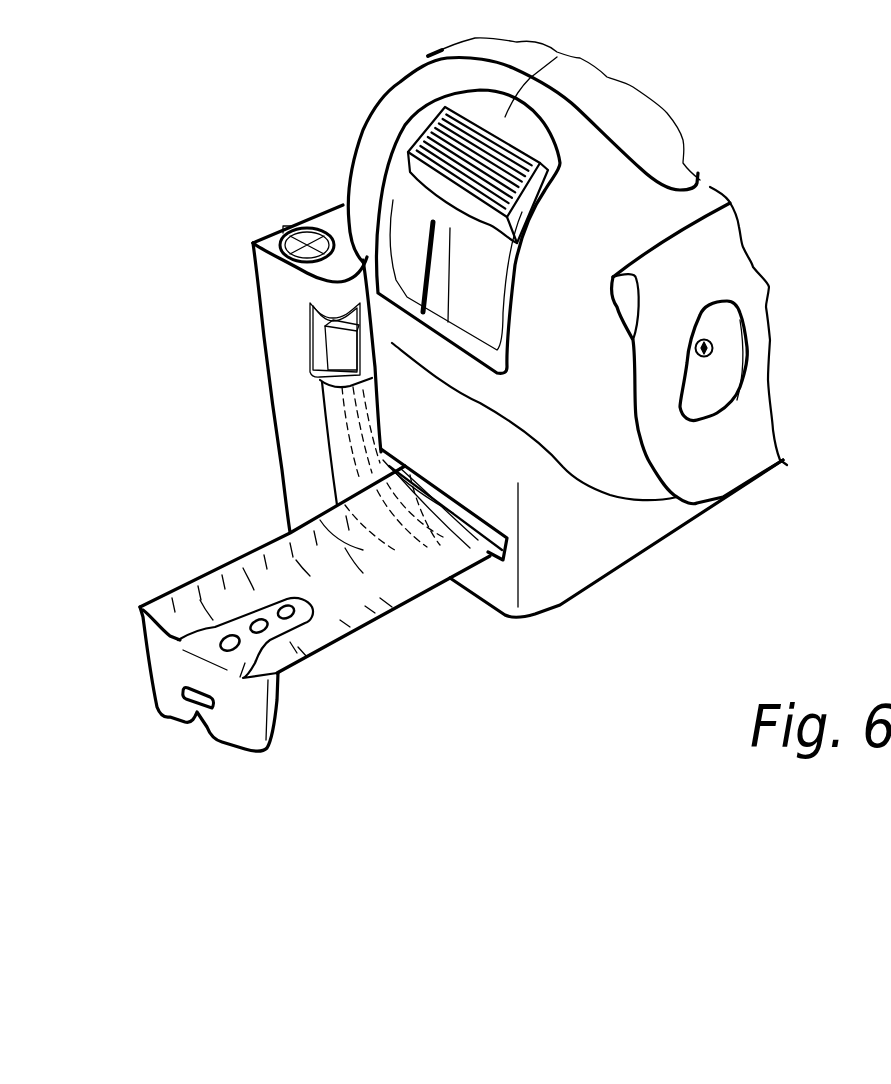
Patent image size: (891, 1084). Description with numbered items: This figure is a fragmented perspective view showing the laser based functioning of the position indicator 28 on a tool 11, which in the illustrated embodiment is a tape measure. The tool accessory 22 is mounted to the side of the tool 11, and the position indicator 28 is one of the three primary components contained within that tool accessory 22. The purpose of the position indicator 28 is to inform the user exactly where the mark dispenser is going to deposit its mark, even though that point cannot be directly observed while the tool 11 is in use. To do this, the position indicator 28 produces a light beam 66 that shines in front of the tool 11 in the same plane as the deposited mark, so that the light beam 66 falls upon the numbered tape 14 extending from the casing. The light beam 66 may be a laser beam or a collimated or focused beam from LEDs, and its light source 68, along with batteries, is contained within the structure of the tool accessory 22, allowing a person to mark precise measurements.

The tool 11 is at (687, 200).
The tape 14 is at (408, 598).
The tool accessory 22 is at (257, 285).
The position indicator 28 is at (333, 293).
The light beam 66 is at (347, 437).
The light source 68 is at (350, 347).